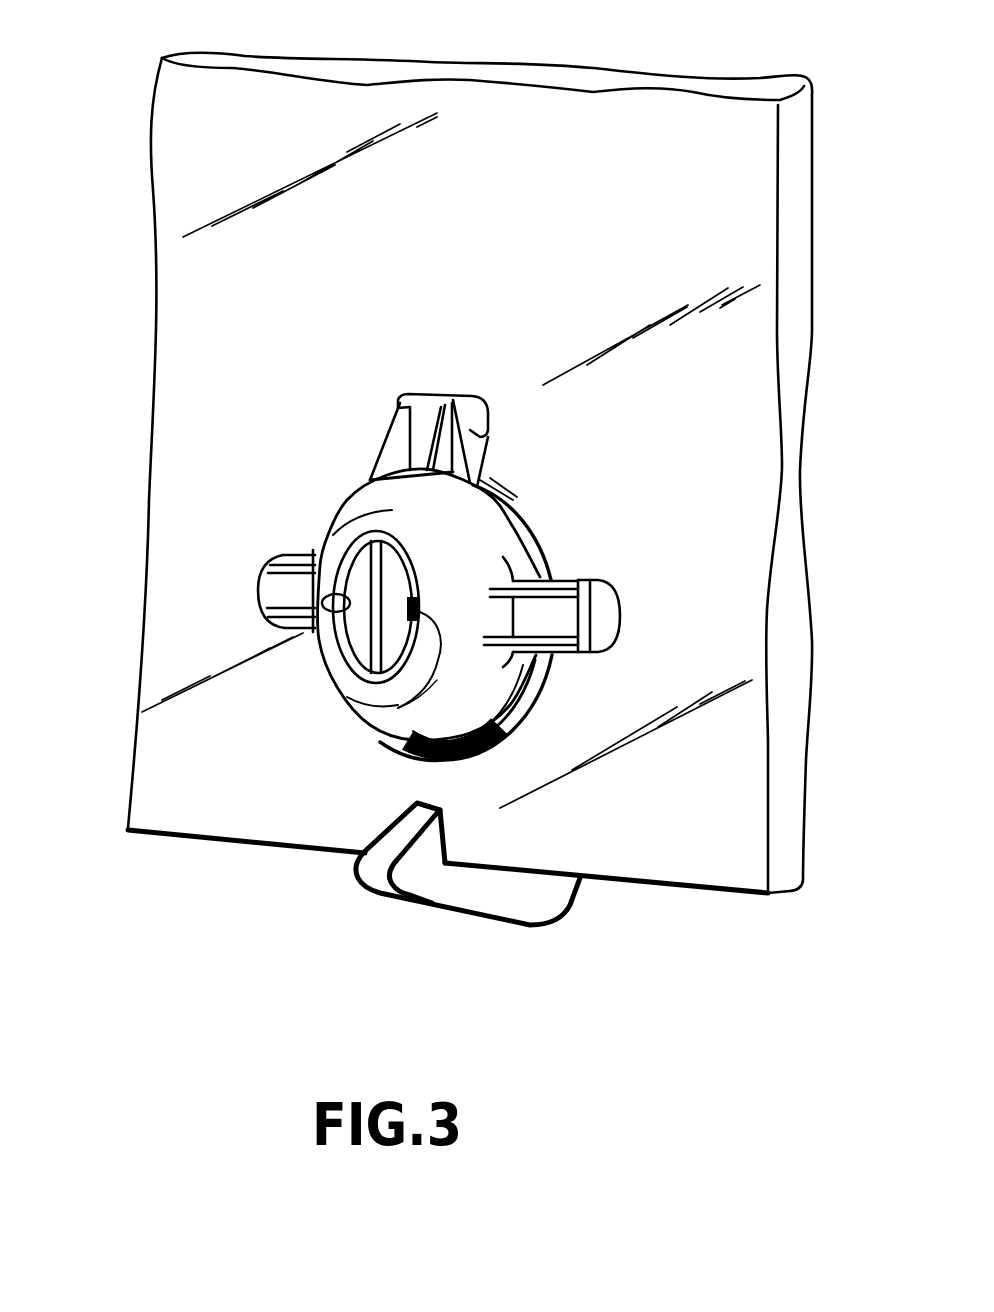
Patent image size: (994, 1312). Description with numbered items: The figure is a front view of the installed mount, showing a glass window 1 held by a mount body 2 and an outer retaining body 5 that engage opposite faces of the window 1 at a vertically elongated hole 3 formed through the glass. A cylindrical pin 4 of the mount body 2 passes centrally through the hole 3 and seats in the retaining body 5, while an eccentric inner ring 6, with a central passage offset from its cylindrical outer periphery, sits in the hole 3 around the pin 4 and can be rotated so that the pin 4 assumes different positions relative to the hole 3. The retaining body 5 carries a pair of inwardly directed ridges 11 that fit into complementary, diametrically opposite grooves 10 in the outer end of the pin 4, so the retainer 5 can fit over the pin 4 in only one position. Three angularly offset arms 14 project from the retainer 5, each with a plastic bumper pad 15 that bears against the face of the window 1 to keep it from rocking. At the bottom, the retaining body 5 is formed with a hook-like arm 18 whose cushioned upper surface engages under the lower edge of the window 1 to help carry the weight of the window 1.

The glass window 1 is at (715, 140).
The mount body 2 is at (557, 978).
The hole 3 is at (433, 755).
The cylindrical pin 4 is at (357, 578).
The retaining body 5 is at (487, 532).
The eccentric inner ring 6 is at (490, 757).
The grooves 10 is at (410, 617).
The ridges 11 is at (437, 680).
The arms 14 is at (280, 595).
The plastic bumper pad 15 is at (487, 417).
The hook-like arm 18 is at (550, 903).